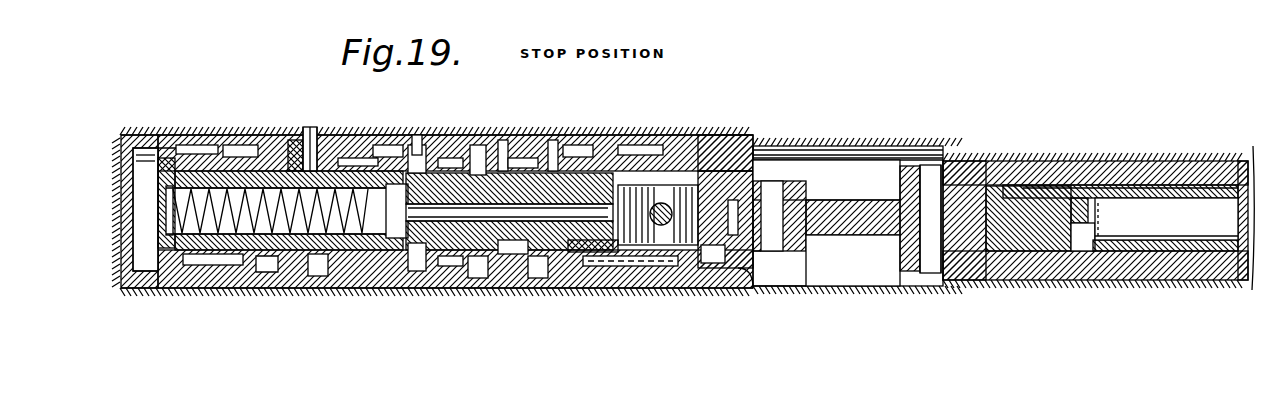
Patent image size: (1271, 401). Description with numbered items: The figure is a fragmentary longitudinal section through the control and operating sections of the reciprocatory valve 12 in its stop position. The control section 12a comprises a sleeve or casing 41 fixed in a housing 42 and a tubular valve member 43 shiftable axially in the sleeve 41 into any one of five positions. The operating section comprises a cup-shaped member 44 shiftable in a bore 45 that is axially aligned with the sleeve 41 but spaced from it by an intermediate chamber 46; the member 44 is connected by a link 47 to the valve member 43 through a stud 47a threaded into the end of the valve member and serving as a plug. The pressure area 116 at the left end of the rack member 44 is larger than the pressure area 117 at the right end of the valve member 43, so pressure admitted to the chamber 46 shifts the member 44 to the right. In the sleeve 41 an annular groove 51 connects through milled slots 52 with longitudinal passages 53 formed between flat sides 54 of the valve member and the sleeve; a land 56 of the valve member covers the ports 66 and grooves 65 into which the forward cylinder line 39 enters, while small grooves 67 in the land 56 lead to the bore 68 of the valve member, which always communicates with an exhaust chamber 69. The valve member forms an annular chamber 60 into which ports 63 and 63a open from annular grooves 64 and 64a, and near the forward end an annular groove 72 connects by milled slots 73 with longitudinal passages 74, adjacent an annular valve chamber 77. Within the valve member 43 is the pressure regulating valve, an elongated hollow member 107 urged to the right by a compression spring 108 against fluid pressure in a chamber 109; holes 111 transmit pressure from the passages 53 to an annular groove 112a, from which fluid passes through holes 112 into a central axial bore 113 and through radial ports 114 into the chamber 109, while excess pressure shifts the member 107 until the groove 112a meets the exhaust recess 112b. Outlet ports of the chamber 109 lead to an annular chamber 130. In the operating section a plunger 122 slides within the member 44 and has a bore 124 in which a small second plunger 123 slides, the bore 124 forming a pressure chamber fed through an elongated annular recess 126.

The valve 12 is at (585, 127).
The control section 12a is at (692, 127).
The forward cylinder line 39 is at (304, 118).
The sleeve or casing 41 is at (695, 260).
The housing 42 is at (738, 282).
The valve member 43 is at (158, 250).
The cup-shaped member 44 is at (990, 153).
The bore 45 is at (945, 155).
The intermediate chamber 46 is at (858, 142).
The link 47 is at (815, 198).
The stud 47a is at (722, 165).
The annular groove 51 is at (400, 235).
The milled slots 52 is at (409, 138).
The longitudinal passages 53 is at (380, 235).
The flat sides 54 is at (378, 138).
The land 56 is at (322, 163).
The annular chamber 60 is at (500, 246).
The ports 63 is at (495, 132).
The ports 63a is at (545, 132).
The annular groove 64 is at (472, 270).
The annular groove 64a is at (530, 270).
The grooves 65 is at (300, 122).
The ports 66 is at (283, 140).
The small grooves 67 is at (340, 150).
The bore 68 is at (160, 140).
The exhaust chamber 69 is at (134, 262).
The annular groove 72 is at (240, 242).
The milled slots 73 is at (232, 140).
The longitudinal passages 74 is at (195, 257).
The annular valve chamber 77 is at (262, 264).
The elongated hollow member 107 is at (512, 150).
The compression spring 108 is at (185, 140).
The chamber 109 is at (632, 138).
The holes 111 is at (442, 150).
The holes 112 is at (470, 138).
The annular groove 112a is at (409, 128).
The recess 112b is at (308, 268).
The central axial bore 113 is at (565, 138).
The radial ports 114 is at (585, 244).
The pressure area 116 is at (892, 254).
The pressure area 117 is at (710, 256).
The plunger 122 is at (1005, 243).
The second plunger 123 is at (1148, 200).
The bore 124 is at (1085, 243).
The elongated annular recess 126 is at (1055, 160).
The annular chamber 130 is at (640, 258).